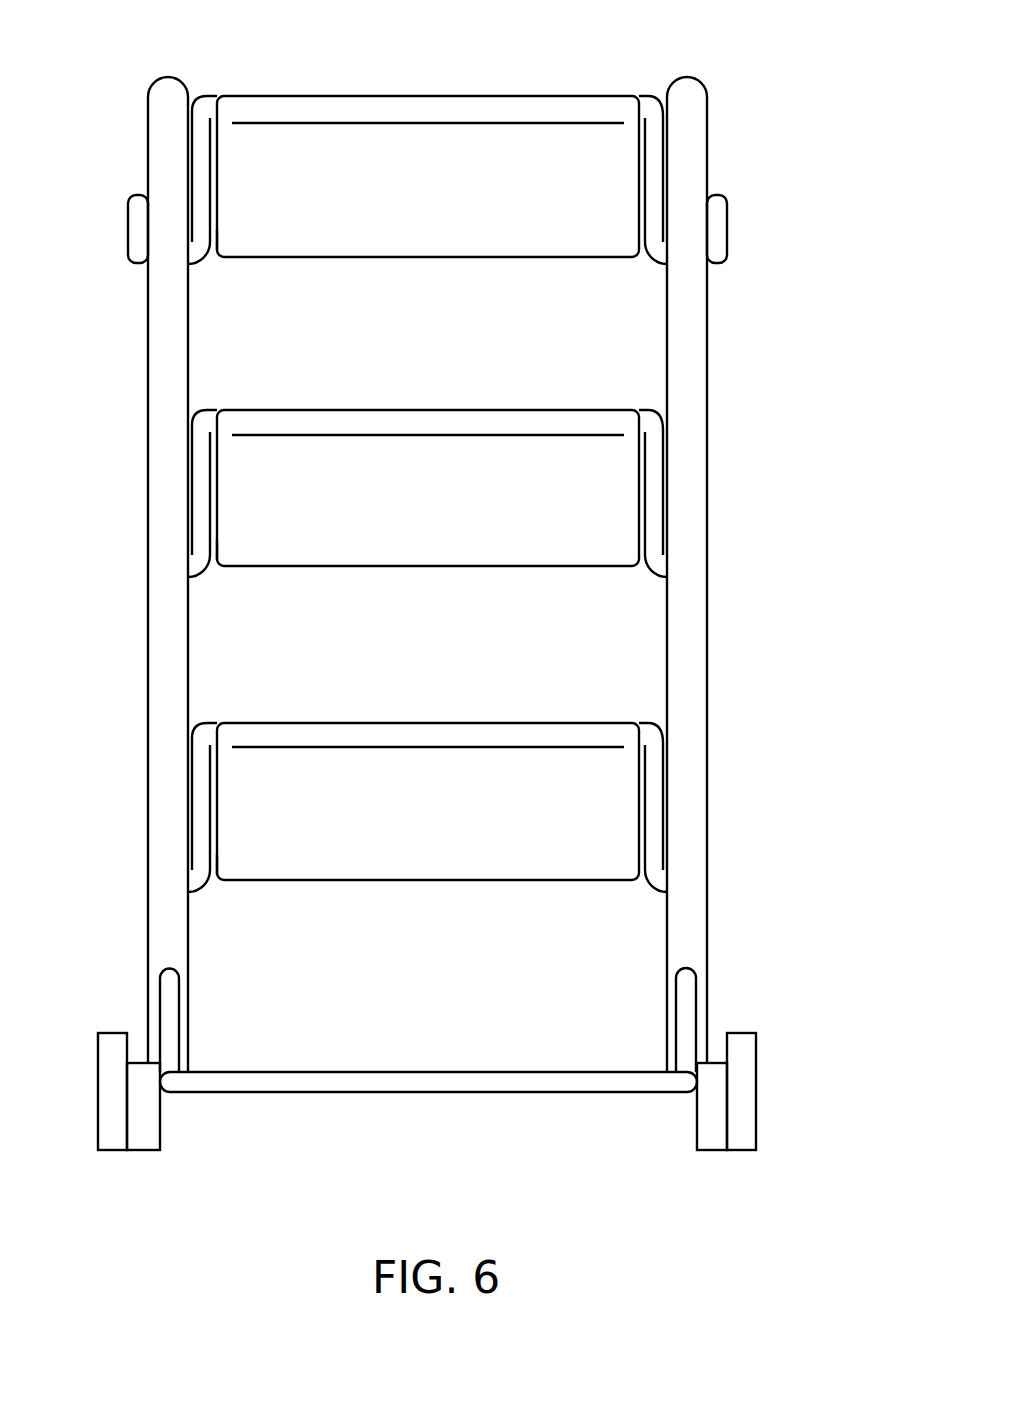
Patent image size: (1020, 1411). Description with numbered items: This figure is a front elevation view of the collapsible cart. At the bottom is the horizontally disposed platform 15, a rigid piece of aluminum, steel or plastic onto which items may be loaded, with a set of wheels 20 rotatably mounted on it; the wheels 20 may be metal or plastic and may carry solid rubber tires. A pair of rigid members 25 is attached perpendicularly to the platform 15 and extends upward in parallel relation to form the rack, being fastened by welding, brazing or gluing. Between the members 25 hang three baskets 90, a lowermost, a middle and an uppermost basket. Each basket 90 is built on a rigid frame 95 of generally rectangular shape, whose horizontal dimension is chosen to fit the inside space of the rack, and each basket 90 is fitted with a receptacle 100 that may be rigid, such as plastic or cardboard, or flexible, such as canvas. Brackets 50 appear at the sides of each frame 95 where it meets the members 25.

The platform 15 is at (437, 1092).
The wheels 20 is at (140, 1150).
The rigid members 25 is at (167, 92).
The brackets 50 is at (202, 148).
The baskets 90 is at (503, 287).
The frame 95 is at (400, 118).
The receptacle 100 is at (248, 223).